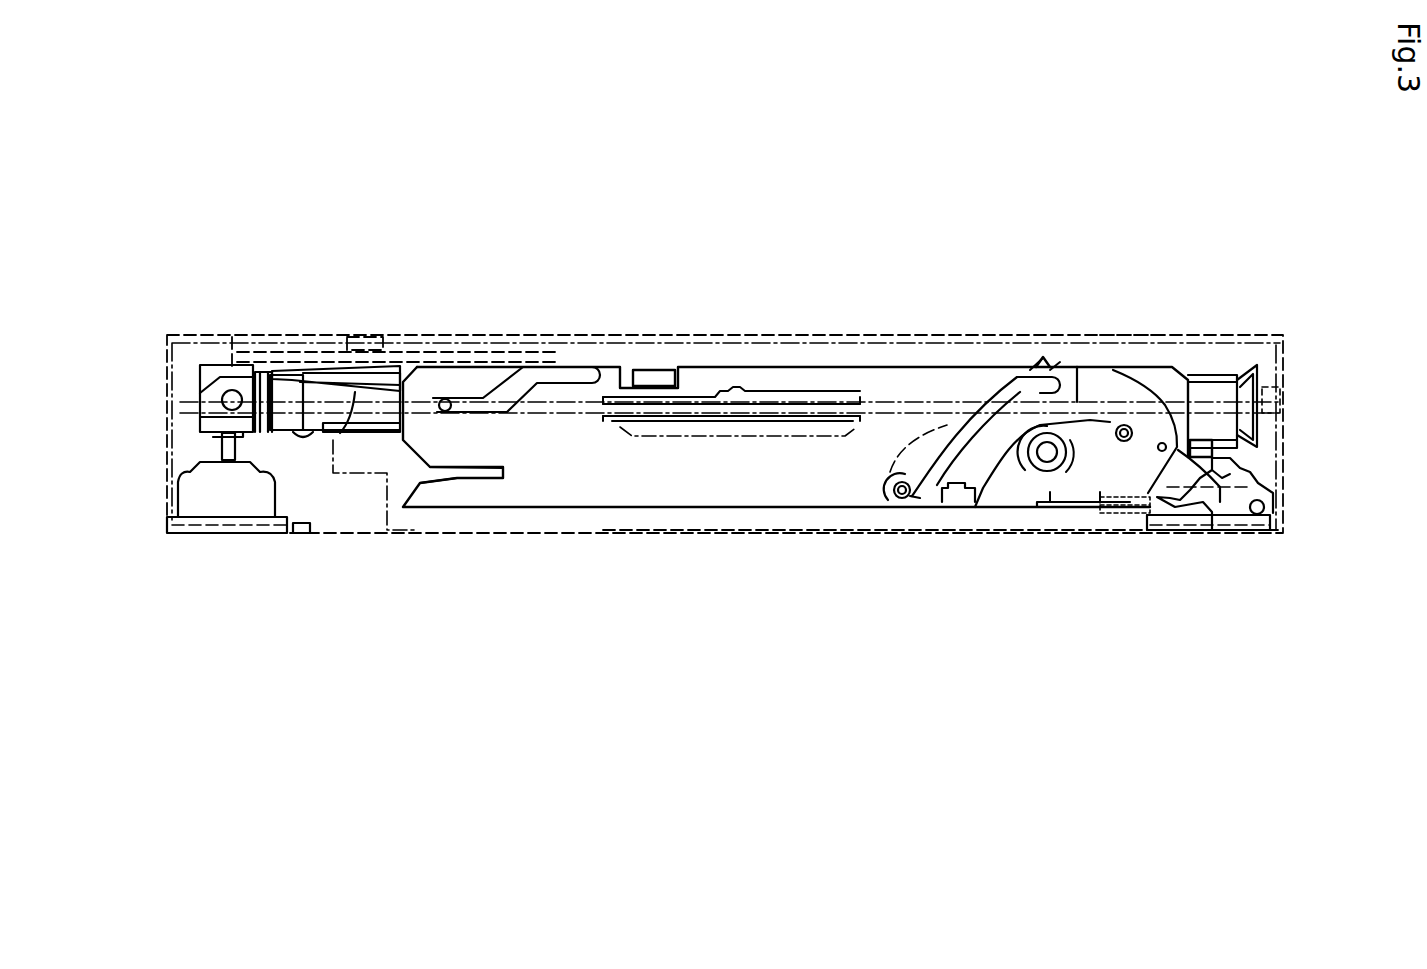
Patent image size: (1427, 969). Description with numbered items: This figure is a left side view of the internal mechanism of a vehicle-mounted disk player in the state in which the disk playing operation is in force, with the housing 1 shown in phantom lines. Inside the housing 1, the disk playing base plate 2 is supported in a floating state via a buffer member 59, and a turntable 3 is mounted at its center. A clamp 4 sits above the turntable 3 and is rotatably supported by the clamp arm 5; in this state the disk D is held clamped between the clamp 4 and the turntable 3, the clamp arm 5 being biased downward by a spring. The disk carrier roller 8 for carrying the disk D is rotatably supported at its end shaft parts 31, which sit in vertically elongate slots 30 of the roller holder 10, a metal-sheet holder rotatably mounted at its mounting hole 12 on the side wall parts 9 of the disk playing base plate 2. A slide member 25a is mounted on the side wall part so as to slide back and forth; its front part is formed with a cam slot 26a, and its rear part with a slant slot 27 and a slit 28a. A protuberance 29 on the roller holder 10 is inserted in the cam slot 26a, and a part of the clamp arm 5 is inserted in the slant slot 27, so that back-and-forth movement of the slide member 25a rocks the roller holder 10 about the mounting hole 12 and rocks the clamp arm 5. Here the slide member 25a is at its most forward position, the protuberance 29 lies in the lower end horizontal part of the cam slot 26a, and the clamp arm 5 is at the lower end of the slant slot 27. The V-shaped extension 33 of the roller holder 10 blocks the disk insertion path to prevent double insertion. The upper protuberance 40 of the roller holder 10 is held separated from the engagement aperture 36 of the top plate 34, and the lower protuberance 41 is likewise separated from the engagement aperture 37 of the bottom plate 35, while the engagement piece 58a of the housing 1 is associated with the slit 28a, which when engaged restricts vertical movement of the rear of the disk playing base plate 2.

The housing 1 is at (606, 332).
The disk playing base plate 2 is at (1210, 418).
The turntable 3 is at (730, 433).
The clamp 4 is at (787, 395).
The clamp arm 5 is at (305, 370).
The disk carrier roller 8 is at (1020, 467).
The side wall parts 9 is at (1153, 378).
The roller holder 10 is at (1065, 490).
The mounting hole 12 is at (1125, 440).
The slide member 25a is at (890, 365).
The cam slot 26a is at (987, 413).
The slant slot 27 is at (470, 400).
The slit 28a is at (458, 480).
The protuberance 29 is at (905, 495).
The vertically elongate slot 30 is at (1065, 445).
The end shaft part 31 is at (1048, 453).
The V-shaped extension 33 is at (1257, 388).
The top plate 34 is at (1123, 333).
The bottom plate 35 is at (1138, 527).
The engagement aperture 36 is at (1023, 337).
The engagement aperture 37 is at (1182, 533).
The upper protuberance 40 is at (1045, 355).
The lower protuberance 41 is at (1217, 497).
The engagement piece 58a is at (360, 480).
The buffer member 59 is at (247, 487).
The disk D is at (1267, 407).